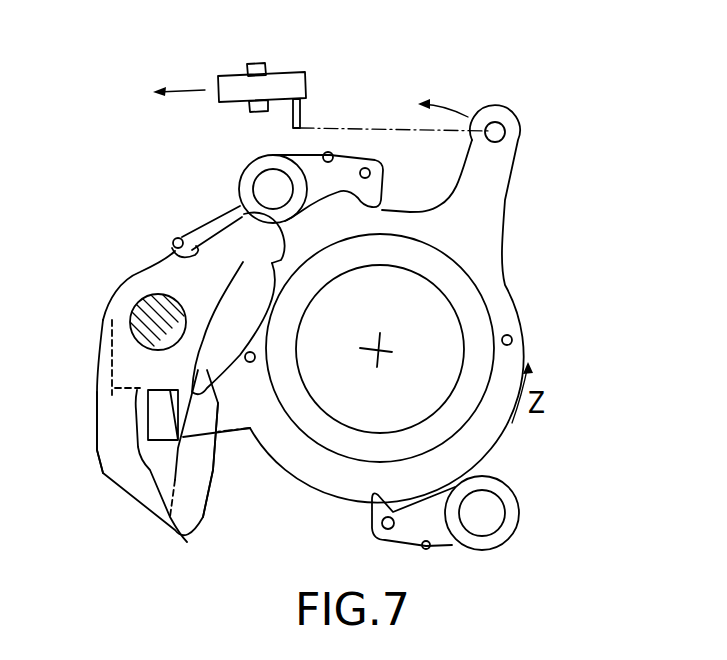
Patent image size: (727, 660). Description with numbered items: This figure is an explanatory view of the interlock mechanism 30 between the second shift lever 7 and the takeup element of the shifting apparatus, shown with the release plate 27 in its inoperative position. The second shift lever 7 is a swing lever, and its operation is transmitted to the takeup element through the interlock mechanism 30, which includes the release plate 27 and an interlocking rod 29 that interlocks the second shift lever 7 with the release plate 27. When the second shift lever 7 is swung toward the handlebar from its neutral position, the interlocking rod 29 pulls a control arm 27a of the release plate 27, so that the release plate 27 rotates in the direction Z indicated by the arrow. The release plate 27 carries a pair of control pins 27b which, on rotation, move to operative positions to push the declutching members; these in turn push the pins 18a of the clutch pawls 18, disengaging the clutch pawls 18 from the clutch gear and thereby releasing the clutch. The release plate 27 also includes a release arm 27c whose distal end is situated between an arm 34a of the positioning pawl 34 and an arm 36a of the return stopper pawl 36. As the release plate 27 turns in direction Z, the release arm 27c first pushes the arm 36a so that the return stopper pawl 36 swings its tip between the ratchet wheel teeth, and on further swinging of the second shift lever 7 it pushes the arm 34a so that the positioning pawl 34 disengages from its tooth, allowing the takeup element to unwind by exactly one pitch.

The second shift lever 7 is at (228, 75).
The clutch pawls 18 is at (280, 157).
The pins 18a is at (370, 172).
The release plate 27 is at (505, 295).
The control arm 27a is at (508, 143).
The control pins 27b is at (258, 353).
The release arm 27c is at (240, 418).
The interlocking rod 29 is at (377, 123).
The interlock mechanism 30 is at (477, 86).
The positioning pawl 34 is at (200, 234).
The arm of the positioning pawl 34a is at (204, 503).
The return stopper pawl 36 is at (237, 229).
The arm of the return stopper pawl 36a is at (106, 452).